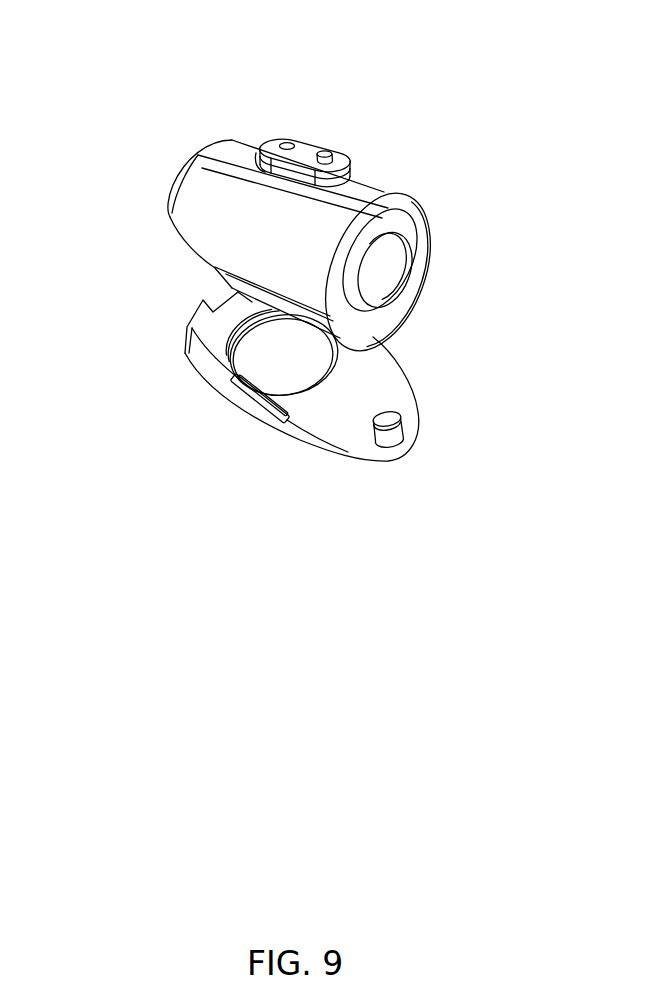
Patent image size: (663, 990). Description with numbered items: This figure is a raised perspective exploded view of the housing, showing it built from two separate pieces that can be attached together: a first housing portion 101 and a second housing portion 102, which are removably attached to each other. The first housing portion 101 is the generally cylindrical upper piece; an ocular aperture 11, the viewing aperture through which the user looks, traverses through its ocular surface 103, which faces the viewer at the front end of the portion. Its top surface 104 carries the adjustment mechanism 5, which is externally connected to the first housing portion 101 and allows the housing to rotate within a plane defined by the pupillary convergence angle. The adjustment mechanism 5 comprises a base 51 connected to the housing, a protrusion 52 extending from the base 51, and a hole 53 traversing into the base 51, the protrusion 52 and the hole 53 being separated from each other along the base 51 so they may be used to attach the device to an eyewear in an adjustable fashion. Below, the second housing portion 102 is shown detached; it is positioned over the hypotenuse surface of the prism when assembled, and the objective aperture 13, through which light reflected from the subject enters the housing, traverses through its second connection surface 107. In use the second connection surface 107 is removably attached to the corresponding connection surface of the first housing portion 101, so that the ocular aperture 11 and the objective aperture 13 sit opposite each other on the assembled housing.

The first housing portion 101 is at (202, 113).
The adjustment mechanism 5 is at (318, 110).
The base 51 is at (262, 146).
The protrusion 52 is at (333, 154).
The hole 53 is at (287, 142).
The top surface 104 is at (375, 198).
The ocular aperture 11 is at (402, 272).
The ocular surface 103 is at (407, 297).
The objective aperture 13 is at (273, 356).
The second housing portion 102 is at (232, 393).
The second connection surface 107 is at (328, 422).